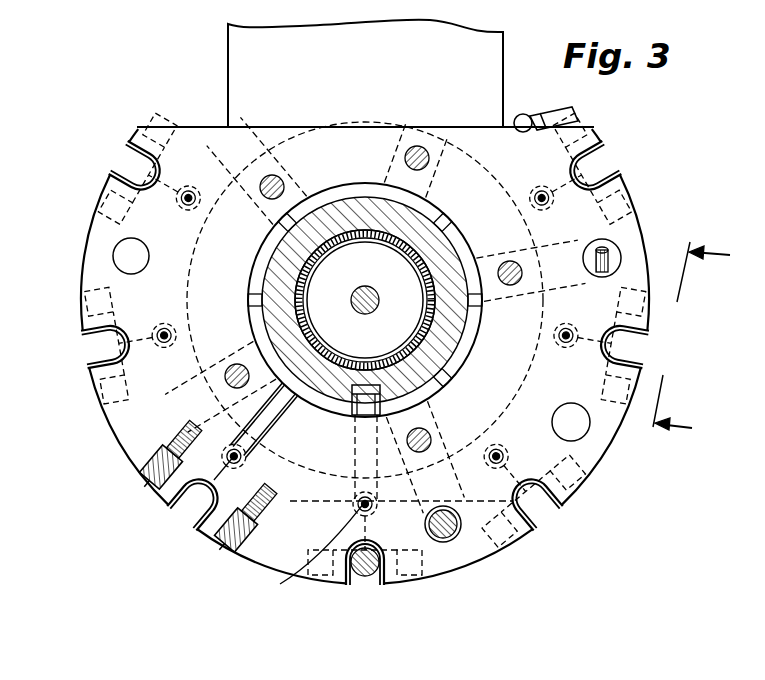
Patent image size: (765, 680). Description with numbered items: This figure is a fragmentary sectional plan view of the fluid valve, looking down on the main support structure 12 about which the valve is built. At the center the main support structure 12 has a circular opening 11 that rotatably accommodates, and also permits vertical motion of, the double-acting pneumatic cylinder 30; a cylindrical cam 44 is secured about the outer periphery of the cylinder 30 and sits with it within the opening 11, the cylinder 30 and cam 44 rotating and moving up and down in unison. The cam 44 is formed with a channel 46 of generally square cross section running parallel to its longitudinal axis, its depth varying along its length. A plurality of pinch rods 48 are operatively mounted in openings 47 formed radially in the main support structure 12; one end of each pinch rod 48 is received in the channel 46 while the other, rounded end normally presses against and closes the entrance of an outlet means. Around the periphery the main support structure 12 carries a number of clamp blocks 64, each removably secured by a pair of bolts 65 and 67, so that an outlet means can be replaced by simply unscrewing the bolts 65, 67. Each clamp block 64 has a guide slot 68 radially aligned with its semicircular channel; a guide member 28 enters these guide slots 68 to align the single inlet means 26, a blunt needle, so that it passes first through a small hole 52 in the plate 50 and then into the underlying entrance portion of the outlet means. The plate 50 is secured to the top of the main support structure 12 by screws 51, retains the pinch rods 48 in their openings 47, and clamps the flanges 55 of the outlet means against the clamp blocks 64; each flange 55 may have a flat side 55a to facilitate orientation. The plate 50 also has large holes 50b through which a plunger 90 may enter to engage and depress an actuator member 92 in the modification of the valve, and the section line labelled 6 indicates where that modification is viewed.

The circular opening 11 is at (373, 183).
The main support structure 12 is at (372, 64).
The inlet means 26 is at (309, 548).
The guide member 28 is at (366, 578).
The double-acting pneumatic cylinder 30 is at (350, 340).
The cylindrical cam 44 is at (338, 200).
The channel 46 is at (348, 410).
The openings 47 is at (192, 412).
The pinch rods 48 is at (482, 212).
The plate 50 is at (84, 268).
The large holes 50b is at (113, 253).
The screws 51 is at (266, 178).
The small holes 52 is at (186, 190).
The flange 55 is at (96, 287).
The flat side 55a is at (168, 443).
The clamp blocks 64 is at (532, 114).
The bolt 65 is at (163, 470).
The bolt 67 is at (238, 535).
The guide slots 68 is at (82, 332).
The plunger 90 is at (455, 526).
The actuator member 92 is at (612, 253).
The section line 6 is at (702, 344).